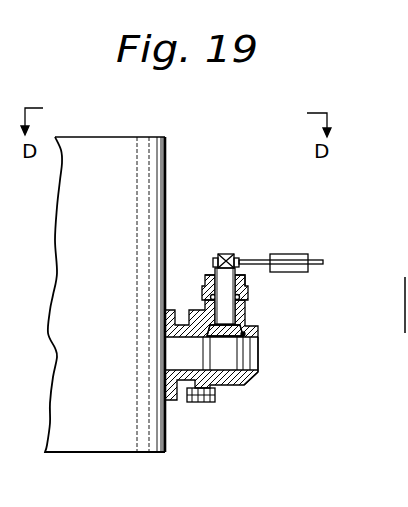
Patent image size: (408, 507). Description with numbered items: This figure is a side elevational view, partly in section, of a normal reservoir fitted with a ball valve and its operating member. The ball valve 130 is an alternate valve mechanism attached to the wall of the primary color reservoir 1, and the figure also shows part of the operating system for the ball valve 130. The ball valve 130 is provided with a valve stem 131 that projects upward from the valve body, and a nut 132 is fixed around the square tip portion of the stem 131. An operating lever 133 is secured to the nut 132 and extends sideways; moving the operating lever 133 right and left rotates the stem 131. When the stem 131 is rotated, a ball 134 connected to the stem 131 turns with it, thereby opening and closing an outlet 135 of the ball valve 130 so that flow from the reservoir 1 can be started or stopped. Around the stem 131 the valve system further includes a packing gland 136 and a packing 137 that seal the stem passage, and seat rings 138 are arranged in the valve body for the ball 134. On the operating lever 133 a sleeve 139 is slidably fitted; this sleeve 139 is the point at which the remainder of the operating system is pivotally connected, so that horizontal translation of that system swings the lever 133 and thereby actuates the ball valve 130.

The primary color reservoir 1 is at (165, 155).
The ball valve 130 is at (270, 346).
The valve stem 131 is at (226, 251).
The nut 132 is at (214, 257).
The operating lever 133 is at (263, 254).
The ball 134 is at (212, 402).
The outlet 135 is at (262, 372).
The packing gland 136 is at (204, 276).
The packing 137 is at (250, 298).
The seat rings 138 is at (258, 330).
The sleeve 139 is at (306, 254).